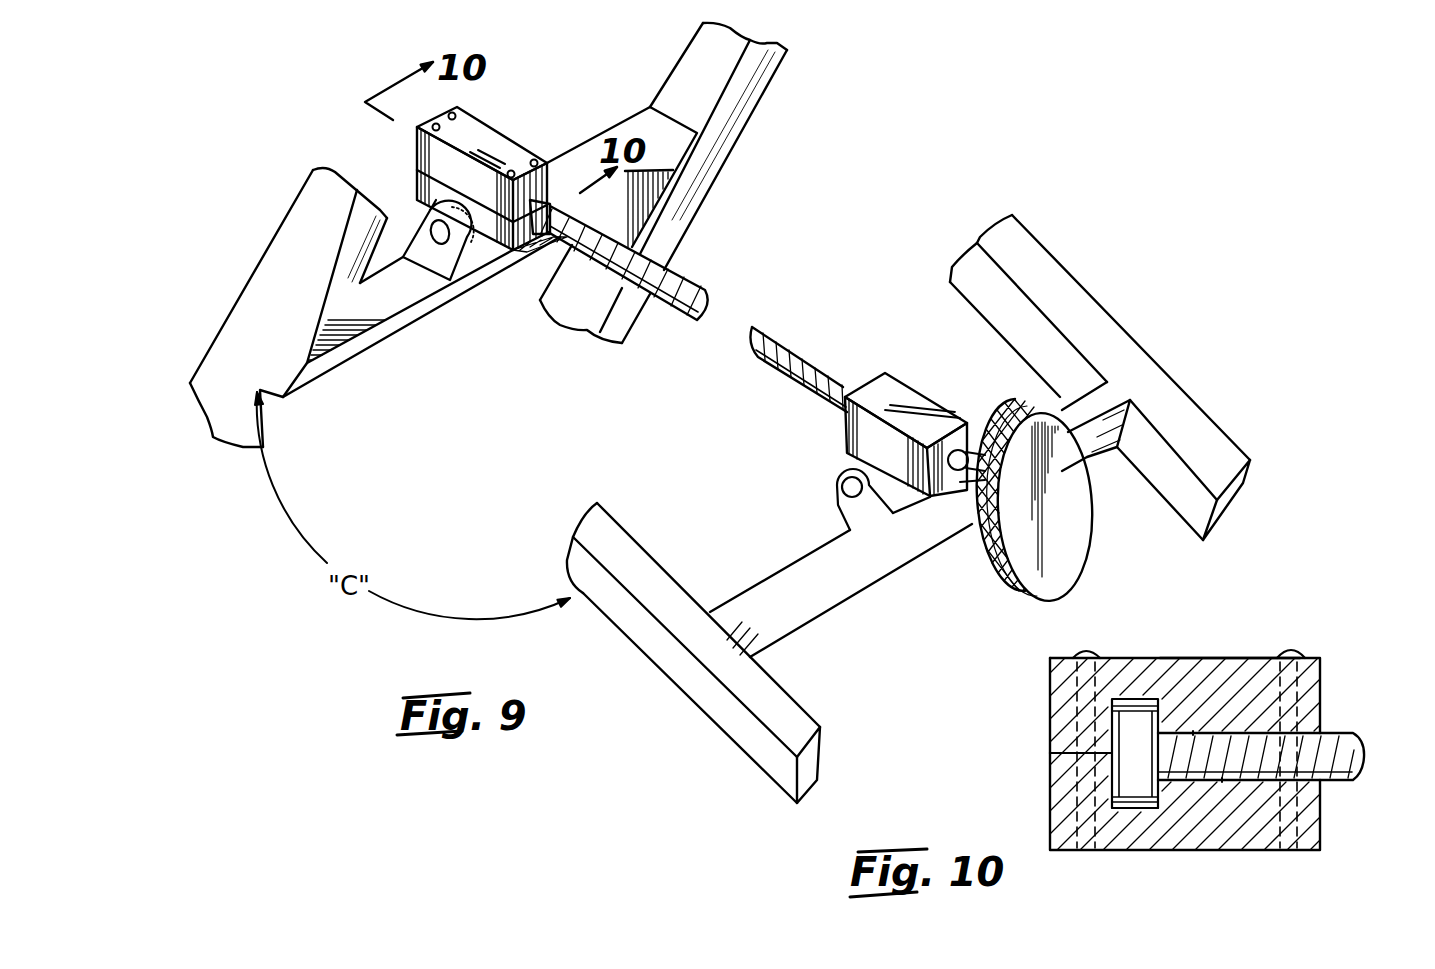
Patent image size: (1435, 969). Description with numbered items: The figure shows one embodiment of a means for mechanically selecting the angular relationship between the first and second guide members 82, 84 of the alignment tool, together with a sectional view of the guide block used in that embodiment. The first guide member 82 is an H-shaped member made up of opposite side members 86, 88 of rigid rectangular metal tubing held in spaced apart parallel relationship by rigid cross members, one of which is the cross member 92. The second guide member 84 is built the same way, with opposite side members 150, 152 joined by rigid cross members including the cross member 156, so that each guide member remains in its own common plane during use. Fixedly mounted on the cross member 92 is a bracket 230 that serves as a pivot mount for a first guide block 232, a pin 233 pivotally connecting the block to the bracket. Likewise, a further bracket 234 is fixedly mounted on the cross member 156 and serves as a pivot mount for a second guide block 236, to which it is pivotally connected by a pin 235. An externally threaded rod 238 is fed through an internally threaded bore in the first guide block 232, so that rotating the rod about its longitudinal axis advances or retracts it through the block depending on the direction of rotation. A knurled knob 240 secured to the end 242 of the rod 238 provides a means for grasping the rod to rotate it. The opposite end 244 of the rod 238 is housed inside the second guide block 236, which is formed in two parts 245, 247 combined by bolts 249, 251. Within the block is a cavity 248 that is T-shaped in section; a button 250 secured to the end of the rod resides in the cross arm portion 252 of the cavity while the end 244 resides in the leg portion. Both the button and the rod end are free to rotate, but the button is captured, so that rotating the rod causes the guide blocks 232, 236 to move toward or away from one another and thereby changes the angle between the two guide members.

In FIG. 9, the second guide member 84 is at (236, 277).
In FIG. 9, the side member 152 is at (225, 348).
In FIG. 9, the cross member 156 is at (370, 347).
In FIG. 9, the side member 150 is at (737, 120).
In FIG. 9, the bracket 234 is at (425, 243).
In FIG. 9, the pin 235 is at (424, 226).
In FIG. 9, the second guide block 236 is at (506, 165).
In FIG. 10, the second guide block 236 is at (1252, 658).
In FIG. 9, the bolt 251 is at (452, 118).
In FIG. 10, the bolt 251 is at (1088, 654).
In FIG. 9, the bolt 249 is at (536, 162).
In FIG. 10, the bolt 249 is at (1302, 650).
In FIG. 9, the externally threaded rod 238 is at (793, 350).
In FIG. 10, the externally threaded rod 238 is at (1285, 745).
In FIG. 9, the first guide member 82 is at (1112, 280).
In FIG. 9, the side member 86 is at (1120, 340).
In FIG. 9, the side member 88 is at (620, 533).
In FIG. 9, the cross member 92 is at (822, 600).
In FIG. 9, the bracket 230 is at (816, 481).
In FIG. 9, the pin 233 is at (843, 480).
In FIG. 9, the first guide block 232 is at (930, 413).
In FIG. 9, the cavity 248 is at (962, 450).
In FIG. 10, the cavity 248 is at (1195, 733).
In FIG. 9, the end of the rod 242 is at (972, 484).
In FIG. 9, the knurled knob 240 is at (1080, 537).
In FIG. 10, the part of guide block 245 is at (1322, 680).
In FIG. 10, the part of guide block 247 is at (1322, 820).
In FIG. 10, the button 250 is at (1143, 757).
In FIG. 10, the cross arm portion 252 is at (1126, 809).
In FIG. 10, the opposite end of the rod 244 is at (1222, 782).